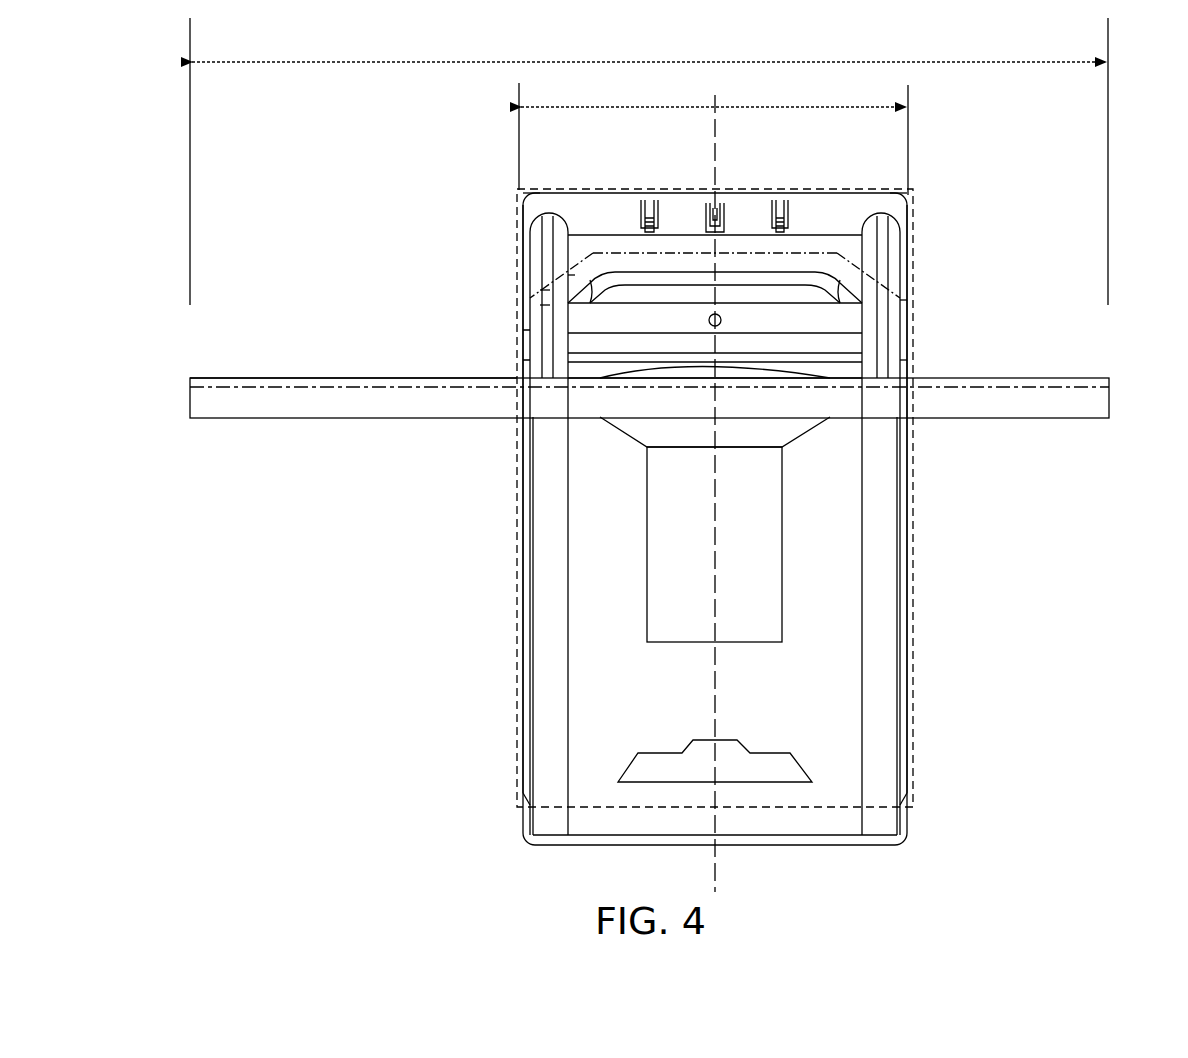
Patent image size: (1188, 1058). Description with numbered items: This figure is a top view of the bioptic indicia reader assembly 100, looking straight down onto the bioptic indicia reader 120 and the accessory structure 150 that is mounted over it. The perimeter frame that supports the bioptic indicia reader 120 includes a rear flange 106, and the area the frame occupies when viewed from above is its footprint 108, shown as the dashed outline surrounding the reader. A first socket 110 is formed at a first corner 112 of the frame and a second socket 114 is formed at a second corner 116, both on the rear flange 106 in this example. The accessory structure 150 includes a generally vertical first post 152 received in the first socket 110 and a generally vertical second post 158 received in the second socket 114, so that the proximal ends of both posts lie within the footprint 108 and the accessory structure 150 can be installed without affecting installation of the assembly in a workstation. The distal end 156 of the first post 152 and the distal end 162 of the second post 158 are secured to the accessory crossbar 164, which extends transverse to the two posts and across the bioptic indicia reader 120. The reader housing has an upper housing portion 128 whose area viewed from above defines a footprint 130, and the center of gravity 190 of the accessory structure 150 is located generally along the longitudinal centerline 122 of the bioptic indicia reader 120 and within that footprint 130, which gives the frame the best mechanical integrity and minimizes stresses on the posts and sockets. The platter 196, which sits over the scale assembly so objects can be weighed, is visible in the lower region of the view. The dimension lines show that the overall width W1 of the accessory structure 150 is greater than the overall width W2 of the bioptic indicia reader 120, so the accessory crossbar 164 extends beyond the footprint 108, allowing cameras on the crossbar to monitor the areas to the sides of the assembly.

The bioptic indicia reader assembly 100 is at (317, 510).
The rear flange 106 is at (816, 212).
The footprint 108 is at (913, 510).
The first socket 110 is at (547, 215).
The first corner 112 is at (527, 189).
The second socket 114 is at (880, 215).
The second corner 116 is at (909, 189).
The bioptic indicia reader 120 is at (571, 274).
The longitudinal centerline 122 is at (716, 876).
The upper housing portion 128 is at (722, 320).
The footprint of upper housing portion 130 is at (545, 290).
The accessory structure 150 is at (496, 379).
The first post 152 is at (547, 305).
The distal end of first post 156 is at (552, 367).
The second post 158 is at (897, 311).
The distal end of second post 162 is at (896, 371).
The accessory crossbar 164 is at (1089, 392).
The center of gravity 190 is at (813, 268).
The platter 196 is at (850, 655).
The overall width of accessory structure W1 is at (629, 161).
The overall width of bioptic indicia reader W2 is at (695, 139).